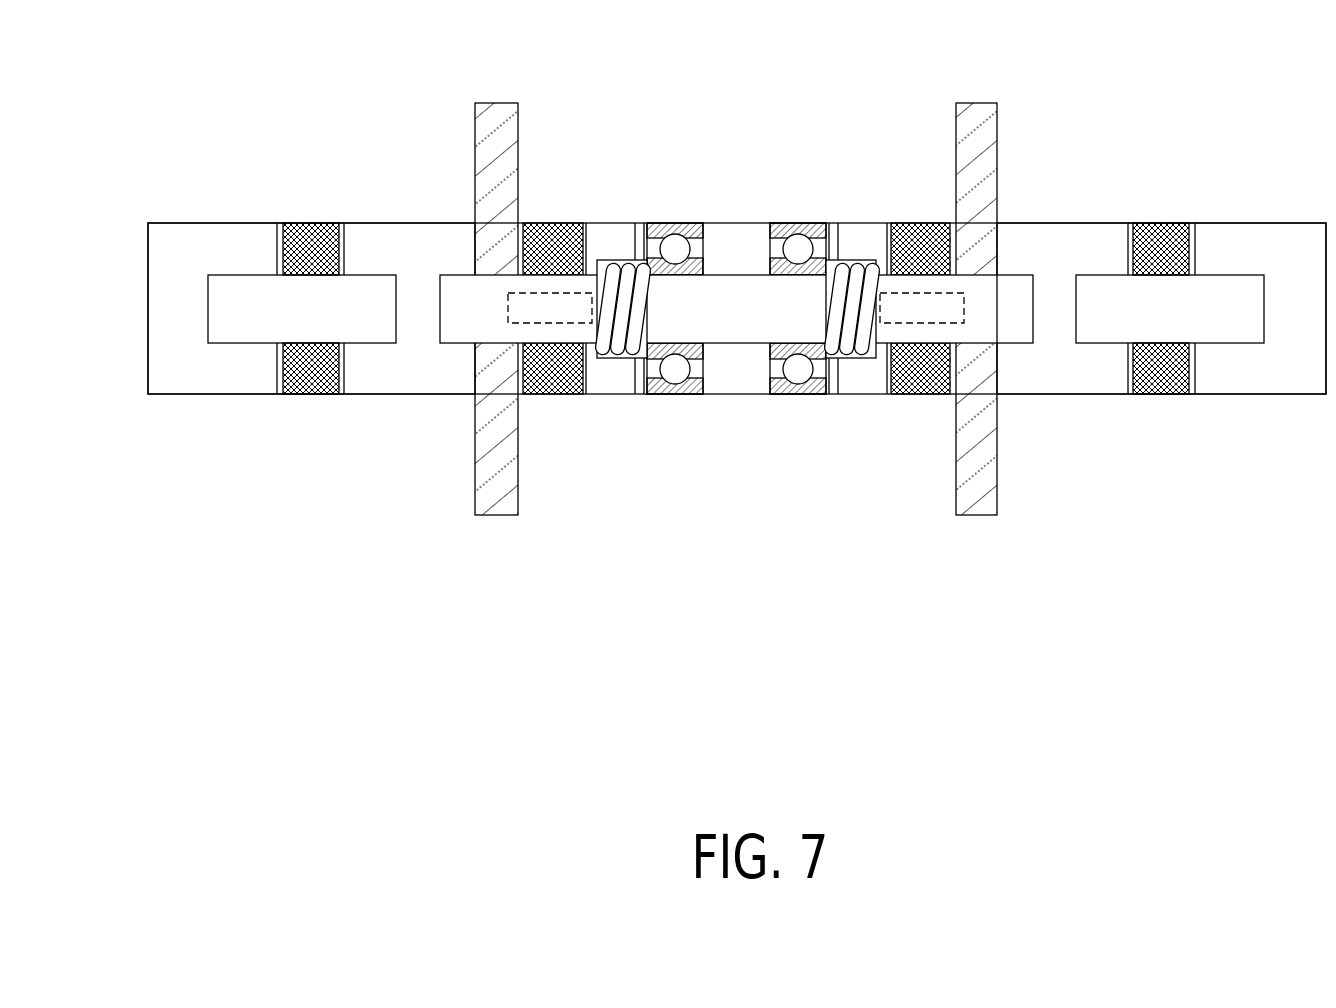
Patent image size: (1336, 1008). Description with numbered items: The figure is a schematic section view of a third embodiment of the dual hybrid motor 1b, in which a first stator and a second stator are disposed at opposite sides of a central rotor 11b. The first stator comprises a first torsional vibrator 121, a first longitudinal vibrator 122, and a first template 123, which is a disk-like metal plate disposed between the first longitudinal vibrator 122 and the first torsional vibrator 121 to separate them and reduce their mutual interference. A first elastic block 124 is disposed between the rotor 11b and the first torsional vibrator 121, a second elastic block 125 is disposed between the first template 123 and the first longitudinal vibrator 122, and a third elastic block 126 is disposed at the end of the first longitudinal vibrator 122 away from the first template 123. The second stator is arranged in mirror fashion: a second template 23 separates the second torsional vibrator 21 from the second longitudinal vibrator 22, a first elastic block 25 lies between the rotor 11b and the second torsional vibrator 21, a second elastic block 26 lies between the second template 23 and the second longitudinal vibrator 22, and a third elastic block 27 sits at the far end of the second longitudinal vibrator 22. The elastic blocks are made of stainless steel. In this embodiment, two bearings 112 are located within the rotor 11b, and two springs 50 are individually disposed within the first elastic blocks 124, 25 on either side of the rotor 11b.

The dual hybrid motor 1b is at (144, 146).
The rotor 11b is at (740, 238).
The bearing 112 is at (825, 146).
The first torsional vibrator 121 is at (922, 397).
The first longitudinal vibrator 122 is at (1167, 397).
The first template 123 is at (962, 490).
The first elastic block 124 is at (852, 225).
The second elastic block 125 is at (1107, 235).
The third elastic block 126 is at (1291, 240).
The second torsional vibrator 21 is at (560, 223).
The second longitudinal vibrator 22 is at (308, 397).
The second template 23 is at (492, 485).
The first elastic block 25 is at (624, 385).
The second elastic block 26 is at (410, 235).
The third elastic block 27 is at (212, 248).
The spring 50 is at (605, 365).